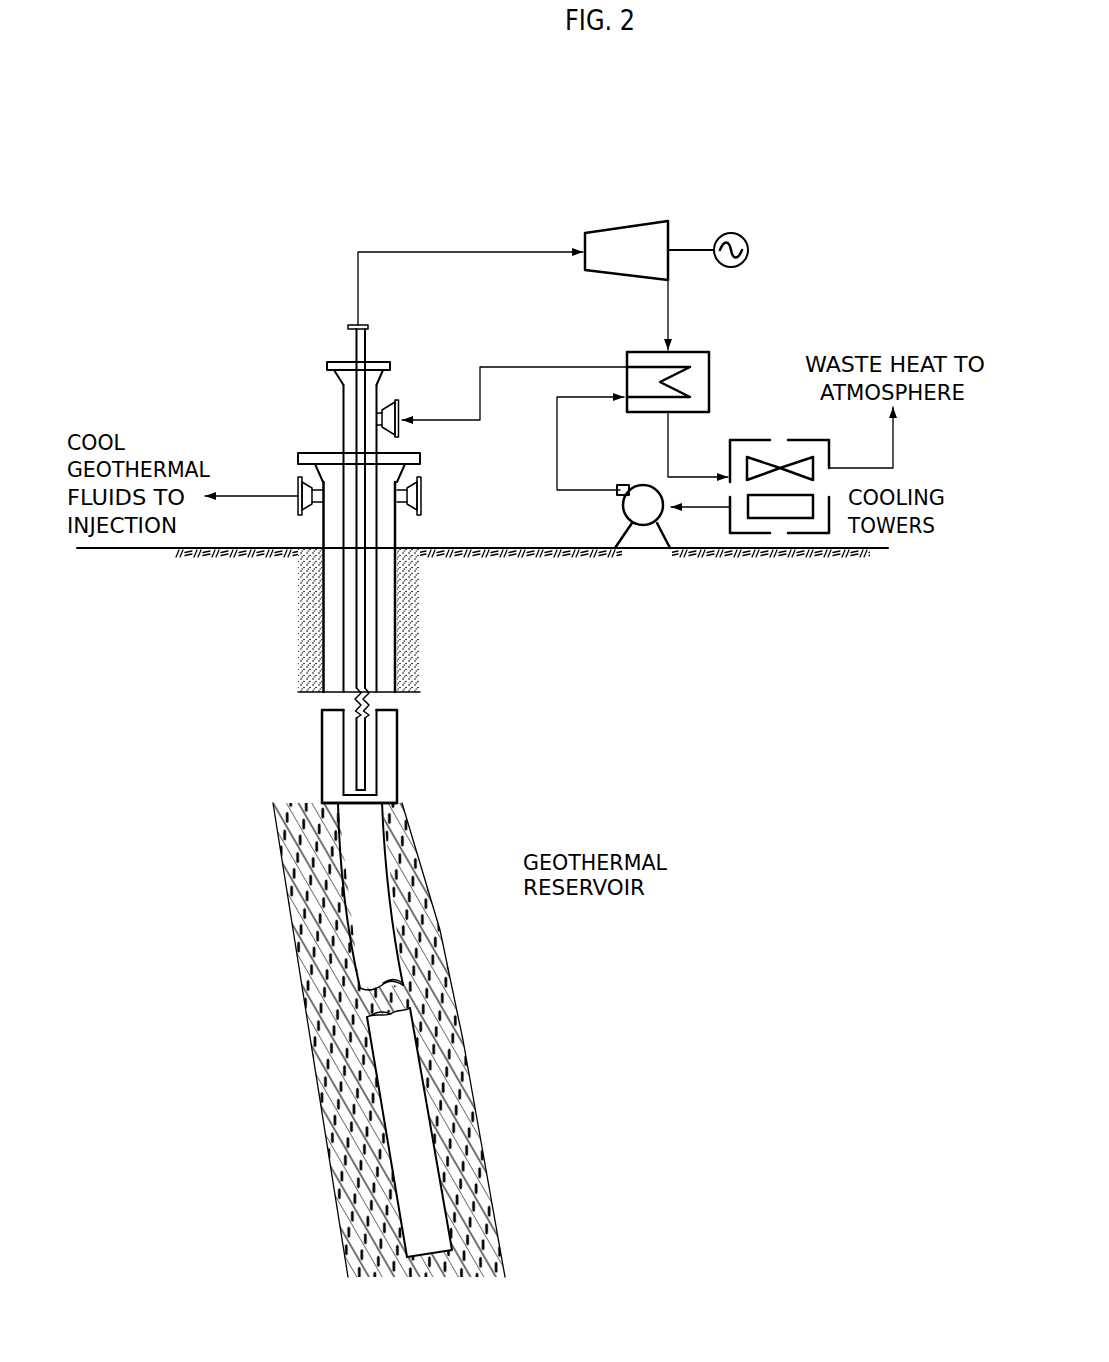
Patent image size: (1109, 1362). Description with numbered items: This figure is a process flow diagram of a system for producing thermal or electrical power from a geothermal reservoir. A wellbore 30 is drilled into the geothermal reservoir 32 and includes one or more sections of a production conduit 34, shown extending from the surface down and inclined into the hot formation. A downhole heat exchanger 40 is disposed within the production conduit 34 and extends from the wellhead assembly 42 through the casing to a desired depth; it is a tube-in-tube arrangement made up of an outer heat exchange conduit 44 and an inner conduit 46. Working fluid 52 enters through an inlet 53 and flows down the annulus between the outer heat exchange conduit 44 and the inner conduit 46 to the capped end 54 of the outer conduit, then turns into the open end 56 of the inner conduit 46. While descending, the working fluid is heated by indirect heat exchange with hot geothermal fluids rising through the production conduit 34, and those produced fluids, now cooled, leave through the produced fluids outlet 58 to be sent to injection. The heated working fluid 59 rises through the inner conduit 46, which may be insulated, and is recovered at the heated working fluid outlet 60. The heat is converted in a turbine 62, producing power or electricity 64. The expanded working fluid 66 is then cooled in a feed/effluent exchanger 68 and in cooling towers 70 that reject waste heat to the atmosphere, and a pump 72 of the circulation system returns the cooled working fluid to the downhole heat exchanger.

The wellbore 30 is at (472, 803).
The geothermal reservoir 32 is at (442, 911).
The production conduit 34 is at (317, 729).
The downhole heat exchanger 40 is at (339, 357).
The wellhead assembly 42 is at (277, 401).
The outer heat exchange conduit 44 is at (380, 665).
The inner conduit 46 is at (367, 627).
The working fluid 52 is at (502, 401).
The inlet 53 is at (398, 398).
The capped end 54 is at (362, 804).
The open end 56 is at (352, 796).
The produced fluids outlet 58 is at (297, 515).
The heated working fluid 59 is at (470, 274).
The heated working fluid outlet 60 is at (371, 317).
The turbine 62 is at (649, 250).
The power or electricity 64 is at (737, 231).
The expanded working fluid 66 is at (674, 309).
The feed/effluent exchanger 68 is at (714, 376).
The cooling towers 70 is at (772, 438).
The pump 72 is at (617, 514).